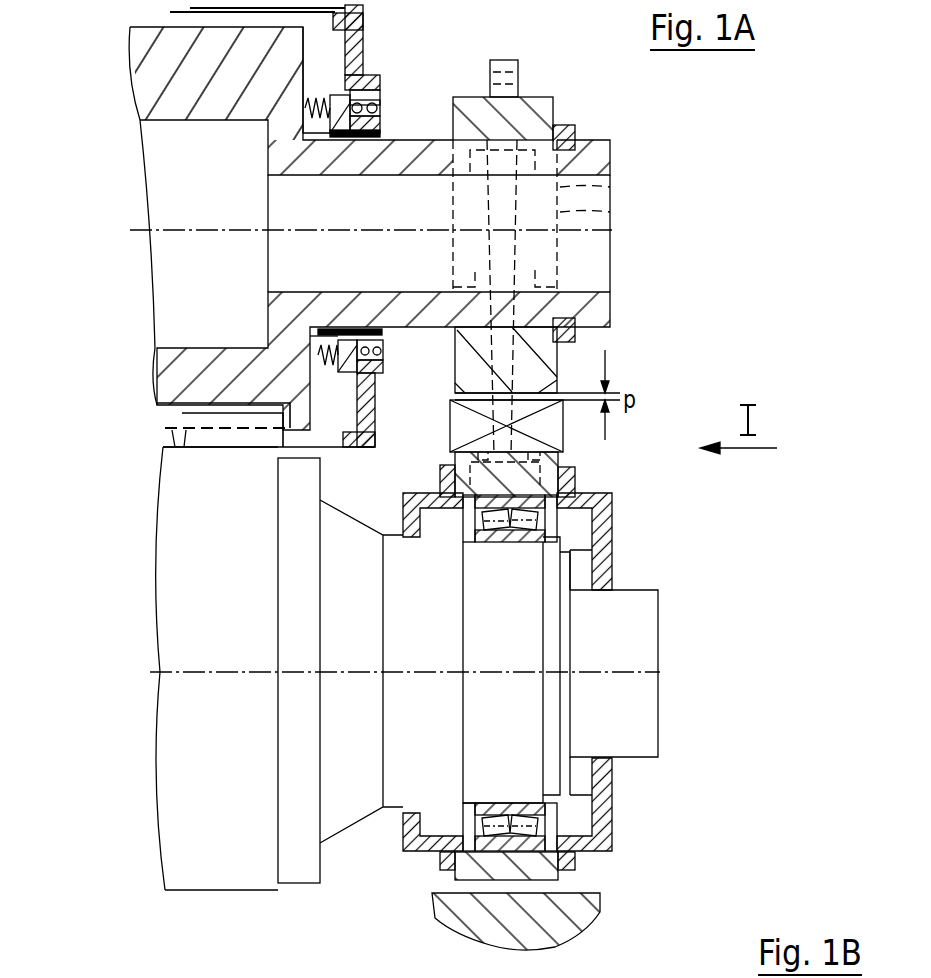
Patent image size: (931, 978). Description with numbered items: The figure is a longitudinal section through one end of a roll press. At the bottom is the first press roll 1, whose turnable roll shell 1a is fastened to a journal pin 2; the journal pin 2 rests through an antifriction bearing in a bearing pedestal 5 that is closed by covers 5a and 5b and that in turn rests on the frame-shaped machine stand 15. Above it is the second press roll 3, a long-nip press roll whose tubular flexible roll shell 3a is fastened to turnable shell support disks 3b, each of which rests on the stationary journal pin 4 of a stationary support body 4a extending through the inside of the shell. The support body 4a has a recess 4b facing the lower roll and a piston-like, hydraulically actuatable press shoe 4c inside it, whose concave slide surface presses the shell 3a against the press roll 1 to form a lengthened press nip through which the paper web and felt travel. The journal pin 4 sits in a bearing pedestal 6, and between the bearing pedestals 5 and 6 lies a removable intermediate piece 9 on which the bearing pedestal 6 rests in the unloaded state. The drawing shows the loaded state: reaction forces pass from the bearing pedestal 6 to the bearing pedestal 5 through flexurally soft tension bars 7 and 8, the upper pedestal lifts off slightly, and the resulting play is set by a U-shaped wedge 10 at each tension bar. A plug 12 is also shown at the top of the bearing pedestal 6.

In FIG. 1A, the first press roll 1 is at (190, 913).
In FIG. 1A, the roll shell 1a is at (268, 882).
In FIG. 1A, the journal pin 2 is at (645, 730).
In FIG. 1A, the second press roll 3 is at (408, 72).
In FIG. 1A, the roll shell 3a is at (185, 2).
In FIG. 1A, the shell support disk 3b is at (363, 27).
In FIG. 1A, the journal pin 4 is at (585, 150).
In FIG. 1A, the support body 4a is at (147, 77).
In FIG. 1A, the recess 4b is at (157, 415).
In FIG. 1A, the press shoe 4c is at (175, 440).
In FIG. 1A, the bearing pedestal 5 is at (468, 868).
In FIG. 1A, the cover 5a is at (408, 860).
In FIG. 1A, the cover 5b is at (605, 843).
In FIG. 1A, the bearing pedestal 6 is at (555, 363).
In FIG. 1A, the tension bar 7 is at (600, 210).
In FIG. 1A, the tension bar 8 is at (547, 857).
In FIG. 1A, the intermediate piece 9 is at (555, 440).
In FIG. 1A, the U-shaped wedge 10 is at (668, 192).
In FIG. 1A, the plug 12 is at (520, 60).
In FIG. 1A, the machine stand 15 is at (595, 908).
In FIG. 1B, the machine stand 15 is at (715, 972).